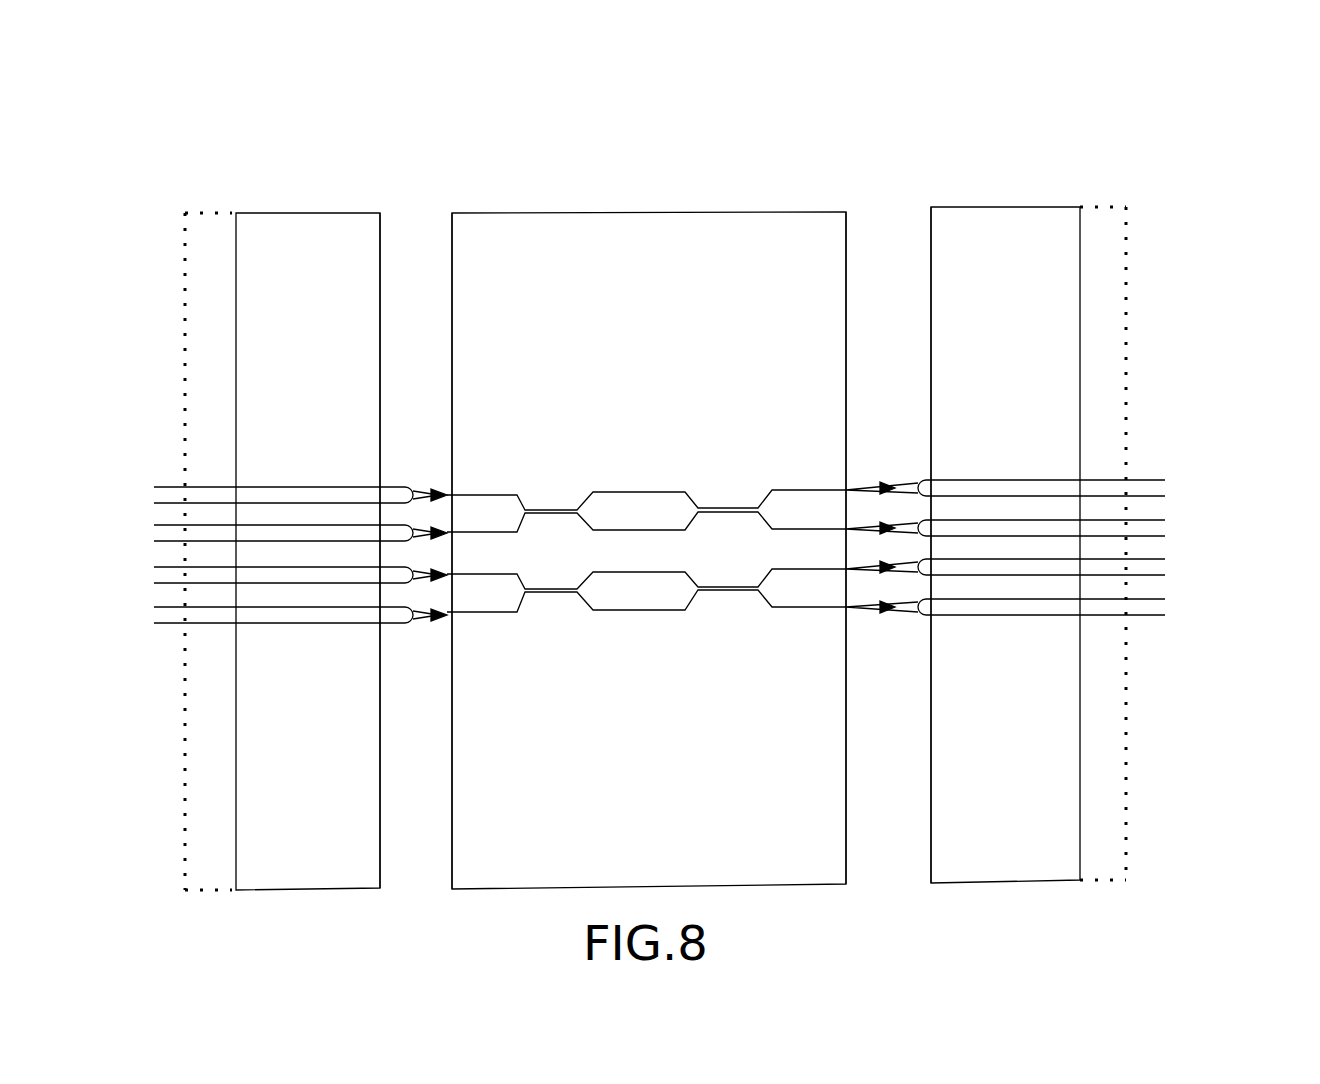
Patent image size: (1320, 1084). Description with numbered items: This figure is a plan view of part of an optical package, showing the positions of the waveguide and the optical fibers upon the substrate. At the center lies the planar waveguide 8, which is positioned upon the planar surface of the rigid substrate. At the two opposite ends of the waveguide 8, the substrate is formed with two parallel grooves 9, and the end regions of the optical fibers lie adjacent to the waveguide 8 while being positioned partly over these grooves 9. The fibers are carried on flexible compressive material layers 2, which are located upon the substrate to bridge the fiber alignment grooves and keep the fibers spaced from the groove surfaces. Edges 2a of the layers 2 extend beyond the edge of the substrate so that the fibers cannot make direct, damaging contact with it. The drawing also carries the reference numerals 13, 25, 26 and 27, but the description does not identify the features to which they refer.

The flexible compressive material layer 2 is at (318, 250).
The edges of the layers 2a is at (210, 228).
The planar waveguide 8 is at (570, 293).
The parallel grooves 9 is at (422, 292).
The optical fiber 13 is at (1040, 475).
The input port 25 is at (430, 630).
The output port 26 is at (884, 622).
The optical waveguide 27 is at (473, 482).